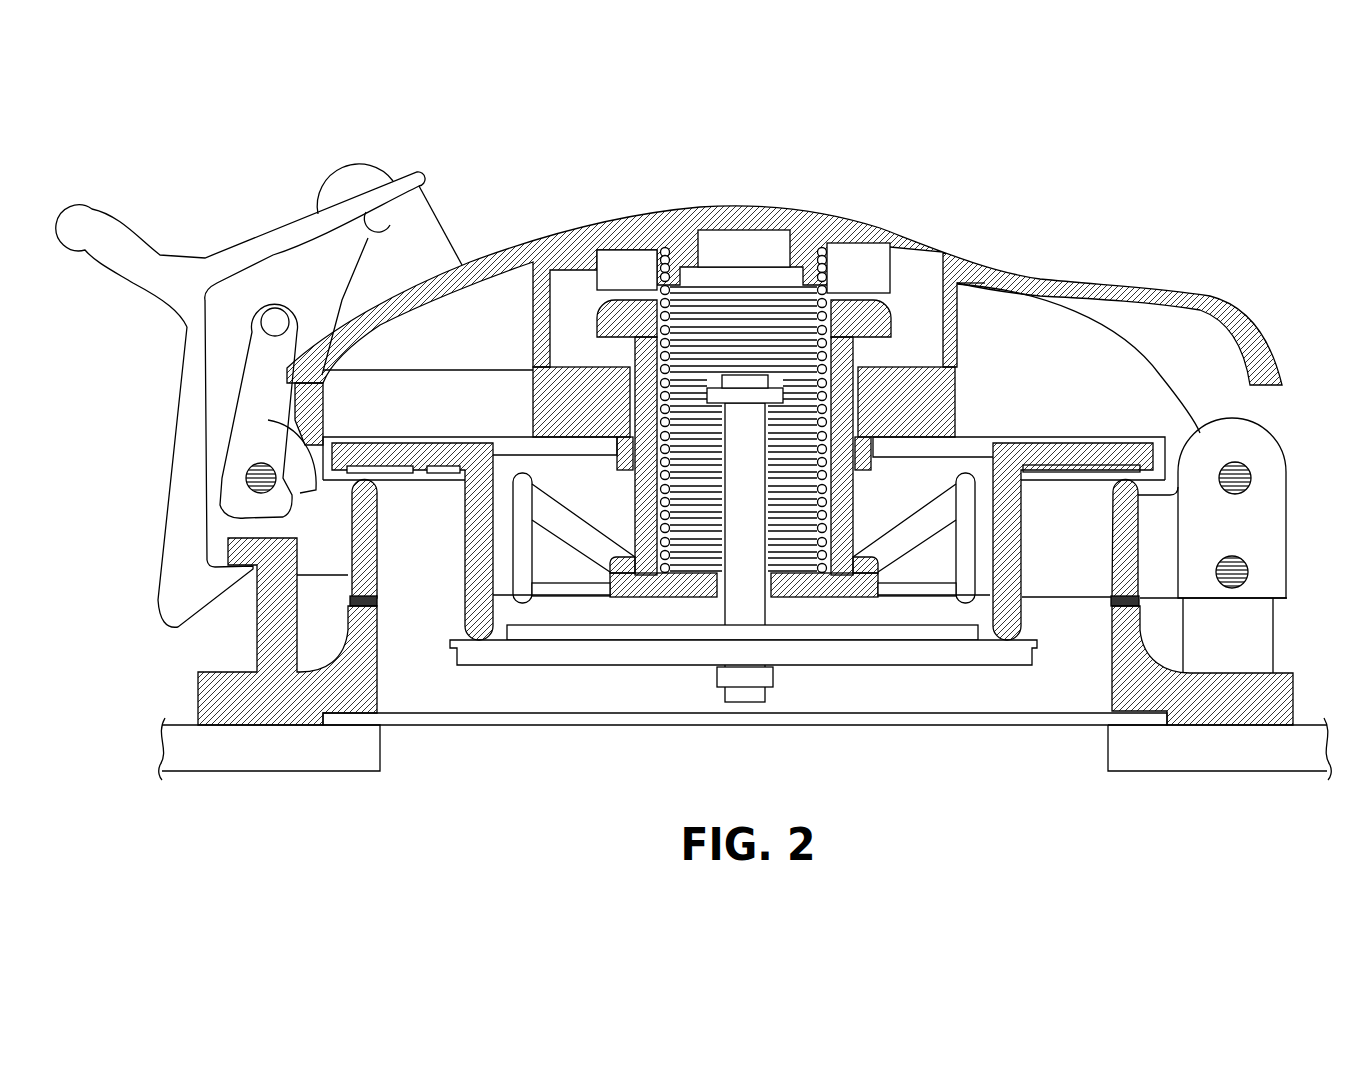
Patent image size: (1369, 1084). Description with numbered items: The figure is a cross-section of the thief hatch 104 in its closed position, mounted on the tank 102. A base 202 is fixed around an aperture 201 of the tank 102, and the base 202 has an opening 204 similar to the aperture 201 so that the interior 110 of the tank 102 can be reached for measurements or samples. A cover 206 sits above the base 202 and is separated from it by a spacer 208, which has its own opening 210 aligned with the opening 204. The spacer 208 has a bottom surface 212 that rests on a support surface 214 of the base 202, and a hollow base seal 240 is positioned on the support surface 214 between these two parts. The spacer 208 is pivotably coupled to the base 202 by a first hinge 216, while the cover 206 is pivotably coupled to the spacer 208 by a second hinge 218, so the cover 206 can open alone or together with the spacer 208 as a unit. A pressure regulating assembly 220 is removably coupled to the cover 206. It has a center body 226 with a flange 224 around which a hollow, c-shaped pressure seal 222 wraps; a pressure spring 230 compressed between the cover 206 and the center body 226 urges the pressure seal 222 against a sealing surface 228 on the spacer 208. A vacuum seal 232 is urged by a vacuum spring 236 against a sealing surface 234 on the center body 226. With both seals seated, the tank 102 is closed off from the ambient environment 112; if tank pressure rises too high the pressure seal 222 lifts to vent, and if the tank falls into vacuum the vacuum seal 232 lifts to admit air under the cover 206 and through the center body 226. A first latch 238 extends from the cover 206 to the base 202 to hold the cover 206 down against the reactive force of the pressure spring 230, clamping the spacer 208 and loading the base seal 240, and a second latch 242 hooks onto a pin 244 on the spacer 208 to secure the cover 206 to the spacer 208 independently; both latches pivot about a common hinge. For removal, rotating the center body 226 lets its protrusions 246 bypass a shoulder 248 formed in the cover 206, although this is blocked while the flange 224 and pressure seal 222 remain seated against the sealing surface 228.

The tank 102 is at (313, 763).
The thief hatch 104 is at (705, 465).
The interior 110 is at (550, 790).
The ambient environment 112 is at (253, 180).
The aperture 201 is at (383, 745).
The base 202 is at (1283, 693).
The opening 204 is at (380, 650).
The cover 206 is at (1175, 291).
The spacer 208 is at (1277, 537).
The opening 210 is at (378, 545).
The bottom surface 212 is at (1117, 600).
The support surface 214 is at (378, 598).
The first hinge 216 is at (1250, 570).
The second hinge 218 is at (1255, 477).
The pressure regulating assembly 220 is at (840, 685).
The pressure seal 222 is at (353, 480).
The flange 224 is at (388, 437).
The center body 226 is at (1013, 443).
The sealing surface 228 is at (378, 477).
The pressure spring 230 is at (657, 277).
The vacuum seal 232 is at (1037, 643).
The sealing surface 234 is at (1017, 640).
The vacuum spring 236 is at (840, 537).
The first latch 238 is at (170, 580).
The base seal 240 is at (1133, 597).
The second latch 242 is at (250, 358).
The pin 244 is at (243, 483).
The protrusions 246 is at (597, 327).
The shoulder 248 is at (617, 367).